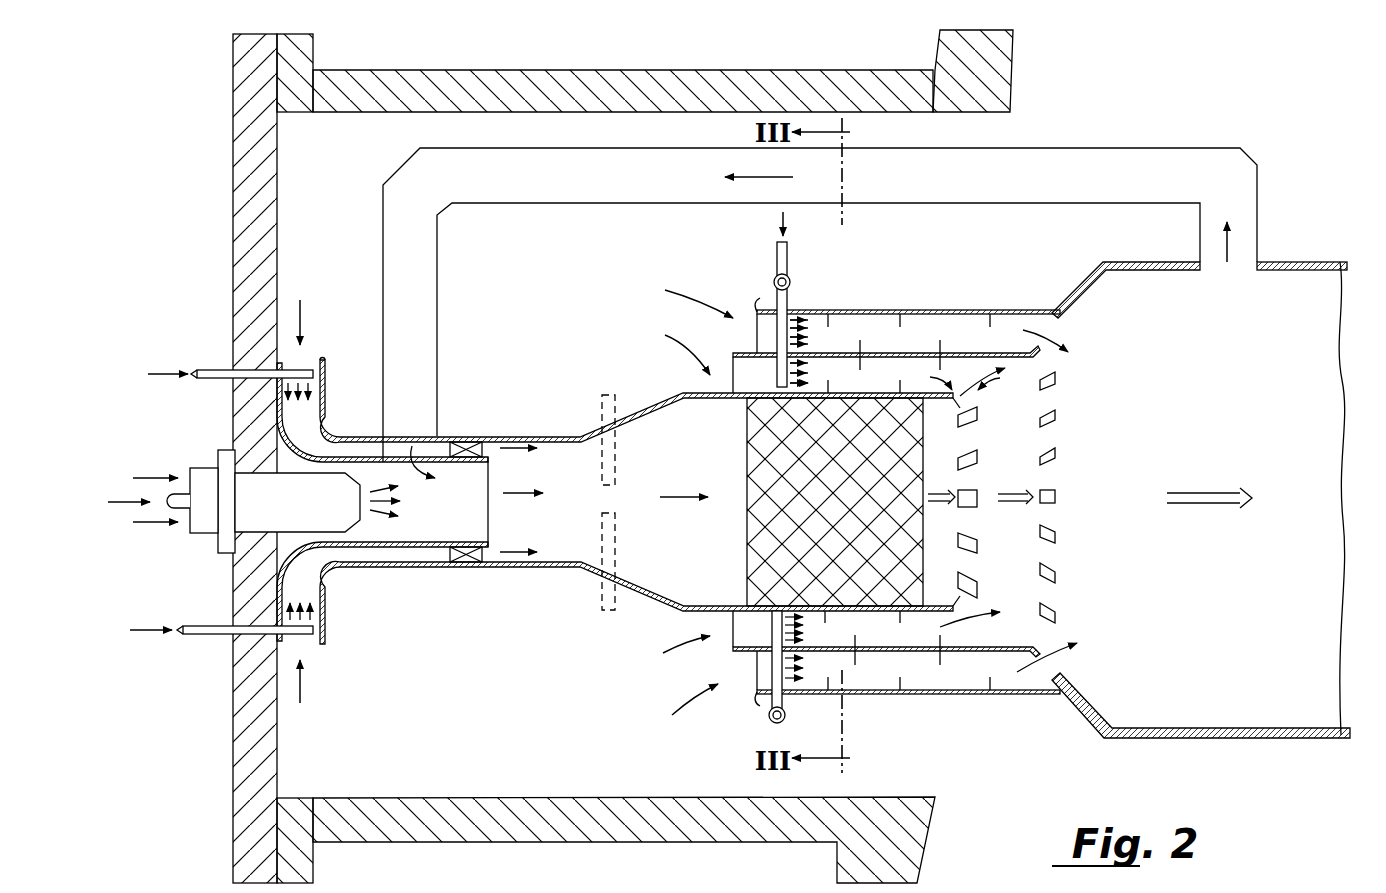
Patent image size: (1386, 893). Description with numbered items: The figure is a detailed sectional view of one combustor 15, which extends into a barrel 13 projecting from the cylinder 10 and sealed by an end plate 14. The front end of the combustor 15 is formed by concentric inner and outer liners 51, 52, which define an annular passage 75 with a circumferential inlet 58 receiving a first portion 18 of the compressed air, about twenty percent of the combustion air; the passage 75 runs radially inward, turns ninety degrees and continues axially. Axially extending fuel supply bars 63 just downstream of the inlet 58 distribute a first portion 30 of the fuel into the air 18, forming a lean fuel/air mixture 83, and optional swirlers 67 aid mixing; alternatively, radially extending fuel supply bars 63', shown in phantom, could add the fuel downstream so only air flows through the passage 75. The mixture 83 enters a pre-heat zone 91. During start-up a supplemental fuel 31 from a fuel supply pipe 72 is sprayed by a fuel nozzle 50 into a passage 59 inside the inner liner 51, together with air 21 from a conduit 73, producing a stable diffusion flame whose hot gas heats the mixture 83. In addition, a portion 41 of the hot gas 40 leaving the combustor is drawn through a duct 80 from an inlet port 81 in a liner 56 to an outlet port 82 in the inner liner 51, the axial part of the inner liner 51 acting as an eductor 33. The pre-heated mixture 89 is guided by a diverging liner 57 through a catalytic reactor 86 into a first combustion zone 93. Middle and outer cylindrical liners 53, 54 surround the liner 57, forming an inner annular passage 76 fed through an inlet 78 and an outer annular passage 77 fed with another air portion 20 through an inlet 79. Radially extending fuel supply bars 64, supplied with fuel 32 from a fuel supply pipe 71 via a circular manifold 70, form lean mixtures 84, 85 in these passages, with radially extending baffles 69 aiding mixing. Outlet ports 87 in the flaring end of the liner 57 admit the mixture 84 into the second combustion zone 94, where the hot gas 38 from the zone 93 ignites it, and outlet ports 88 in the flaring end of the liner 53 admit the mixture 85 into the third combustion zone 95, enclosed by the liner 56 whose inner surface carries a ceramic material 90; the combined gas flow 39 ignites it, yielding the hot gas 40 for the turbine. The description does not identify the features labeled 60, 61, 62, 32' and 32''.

The cylinder 10 is at (935, 46).
The barrel 13 is at (697, 70).
The end plate 14 is at (233, 200).
The combustor 15 is at (1170, 120).
The first portion of compressed air 18 is at (301, 300).
The portion of compressed air 20 is at (687, 290).
The air 21 is at (140, 478).
The first portion of fuel 30 is at (158, 373).
The supplemental fuel 31 is at (113, 507).
The fuel 32 is at (808, 297).
The cooling air stream 32' is at (842, 680).
The cooling air stream 32'' is at (808, 674).
The eductor 33 is at (413, 548).
The gas 38 is at (940, 492).
The combined gas flow 39 is at (1000, 493).
The hot gas 40 is at (418, 485).
The portion of hot gas 41 is at (1232, 243).
The fuel nozzle 50 is at (284, 511).
The inner liner 51 is at (307, 450).
The outer liner 52 is at (323, 388).
The middle cylindrical liner 53 is at (912, 353).
The outer cylindrical liner 54 is at (970, 310).
The liner 56 is at (1157, 262).
The diverging liner 57 is at (721, 399).
The circumferential inlet 58 is at (323, 356).
The passage 59 is at (453, 498).
The transition section 60 is at (664, 398).
The outlet opening 61 is at (954, 381).
The outlet opening 62 is at (1053, 310).
The fuel supply bars 63 is at (335, 380).
The radially extending fuel supply bars 63' is at (585, 473).
The radially extending fuel supply bars 64 is at (790, 300).
The swirlers 67 is at (467, 440).
The radially extending baffles 69 is at (830, 318).
The circular manifold 70 is at (792, 277).
The fuel supply pipe 71 is at (777, 252).
The fuel supply pipe 72 is at (182, 493).
The conduit 73 is at (205, 537).
The annular passage 75 is at (328, 577).
The inner annular passage 76 is at (737, 631).
The outer annular passage 77 is at (750, 683).
The inlet 78 is at (730, 613).
The inlet 79 is at (750, 670).
The duct 80 is at (1072, 148).
The inlet port 81 is at (1237, 270).
The outlet port 82 is at (424, 458).
The lean fuel/air mixture 83 is at (513, 436).
The lean fuel/air mixture 84 is at (986, 497).
The lean fuel/air mixture 85 is at (1065, 338).
The catalytic reactor 86 is at (829, 513).
The outlet ports 87 is at (977, 455).
The outlet ports 88 is at (1055, 415).
The pre-heated fuel/air mixture 89 is at (672, 496).
The ceramic material 90 is at (1160, 272).
The pre-heat zone 91 is at (567, 509).
The combustion zone 93 is at (923, 553).
The second combustion zone 94 is at (998, 556).
The third combustion zone 95 is at (1091, 546).